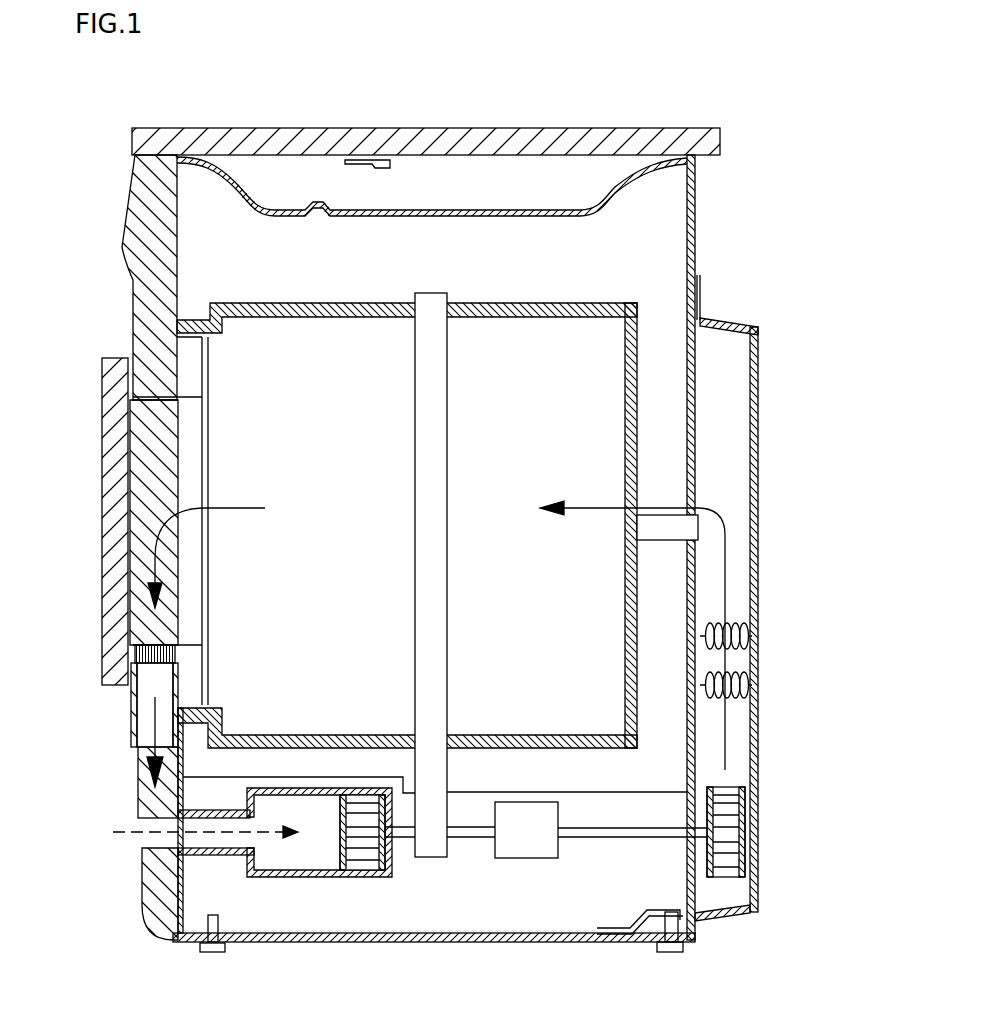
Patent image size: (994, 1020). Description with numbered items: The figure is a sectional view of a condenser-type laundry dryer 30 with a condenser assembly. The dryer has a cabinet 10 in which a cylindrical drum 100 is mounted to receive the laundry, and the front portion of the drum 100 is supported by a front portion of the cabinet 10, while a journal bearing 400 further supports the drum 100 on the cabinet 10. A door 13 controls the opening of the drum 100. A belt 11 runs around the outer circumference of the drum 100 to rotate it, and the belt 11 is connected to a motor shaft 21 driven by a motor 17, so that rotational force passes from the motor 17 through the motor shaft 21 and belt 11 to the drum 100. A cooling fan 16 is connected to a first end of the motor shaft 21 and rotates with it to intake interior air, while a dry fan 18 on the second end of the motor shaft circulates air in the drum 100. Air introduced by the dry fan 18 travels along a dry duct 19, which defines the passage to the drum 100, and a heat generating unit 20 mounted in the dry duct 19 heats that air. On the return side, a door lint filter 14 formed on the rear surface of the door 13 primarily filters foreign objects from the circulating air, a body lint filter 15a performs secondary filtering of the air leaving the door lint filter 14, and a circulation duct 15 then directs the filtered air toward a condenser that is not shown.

The cabinet 10 is at (697, 247).
The cylindrical drum 100 is at (357, 303).
The belt 11 is at (435, 303).
The door 13 is at (107, 473).
The door lint filter 14 is at (133, 540).
The circulation duct 15 is at (148, 726).
The body lint filter 15a is at (140, 655).
The cooling fan 16 is at (358, 857).
The motor 17 is at (503, 858).
The dry fan 18 is at (728, 870).
The dry duct 19 is at (742, 733).
The heat generating unit 20 is at (748, 635).
The motor shaft 21 is at (592, 832).
The condenser-type laundry dryer 30 is at (797, 325).
The journal bearing 400 is at (665, 528).